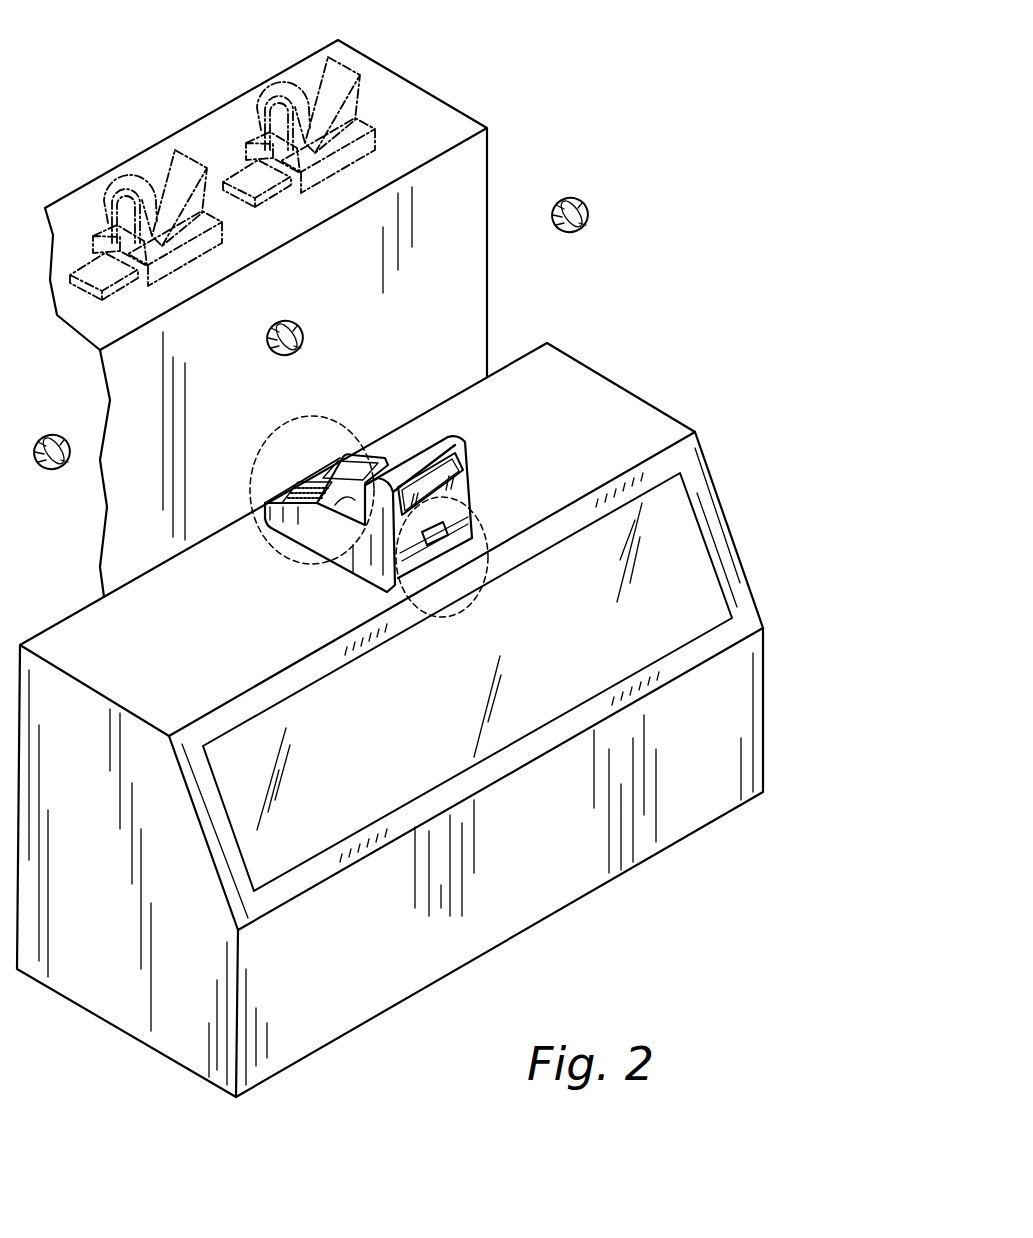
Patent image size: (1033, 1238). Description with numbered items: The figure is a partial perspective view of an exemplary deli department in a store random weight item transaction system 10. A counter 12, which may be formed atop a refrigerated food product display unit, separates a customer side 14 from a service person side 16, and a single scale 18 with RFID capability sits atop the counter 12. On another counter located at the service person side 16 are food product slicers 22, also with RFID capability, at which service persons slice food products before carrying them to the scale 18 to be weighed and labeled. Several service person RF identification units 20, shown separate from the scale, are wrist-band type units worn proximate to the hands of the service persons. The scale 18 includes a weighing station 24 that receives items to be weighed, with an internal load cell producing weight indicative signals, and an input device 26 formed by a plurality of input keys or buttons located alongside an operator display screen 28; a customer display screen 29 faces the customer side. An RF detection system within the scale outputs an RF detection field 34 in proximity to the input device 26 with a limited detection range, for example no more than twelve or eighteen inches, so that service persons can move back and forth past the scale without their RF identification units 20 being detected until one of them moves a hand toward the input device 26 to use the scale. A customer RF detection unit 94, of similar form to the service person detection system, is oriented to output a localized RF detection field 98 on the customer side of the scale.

The tool tracking system 10 is at (610, 134).
The counter 12 is at (601, 400).
The customer side 14 is at (667, 730).
The service person side 16 is at (530, 318).
The scale 18 is at (473, 437).
The service person RF identification unit 20 is at (268, 325).
The food product slicer 22 is at (247, 78).
The weighing station 24 is at (312, 532).
The input device 26 is at (297, 478).
The operator display screen 28 is at (351, 458).
The customer display screen 29 is at (432, 488).
The RF detection field 34 is at (252, 556).
The customer RF detection unit 94 is at (441, 538).
The localized RF detection field 98 is at (494, 513).